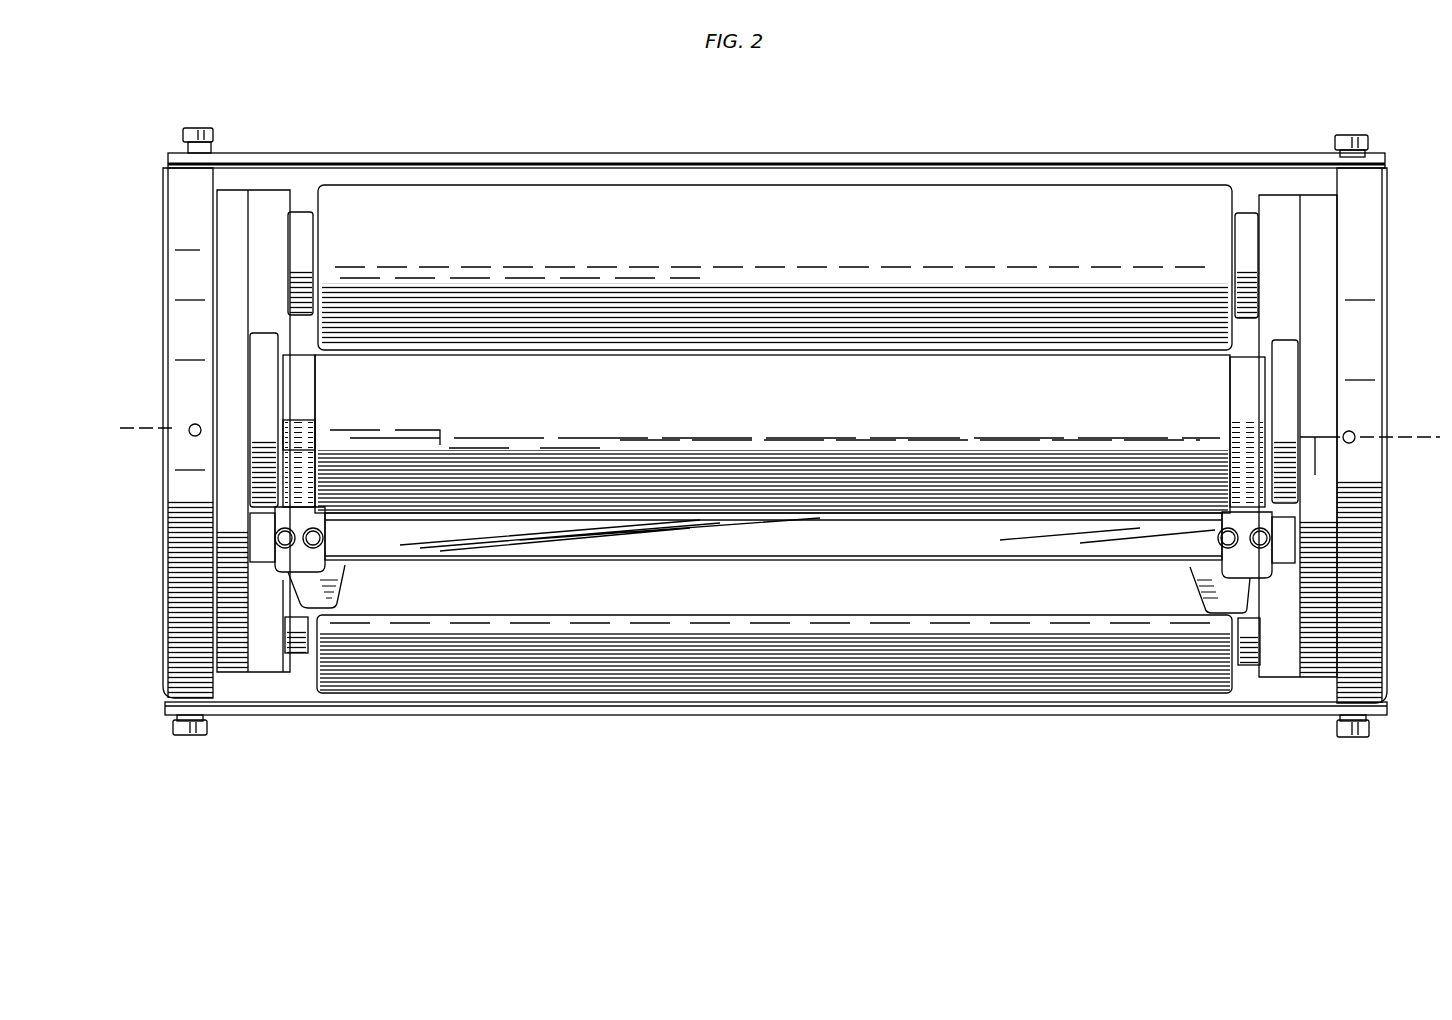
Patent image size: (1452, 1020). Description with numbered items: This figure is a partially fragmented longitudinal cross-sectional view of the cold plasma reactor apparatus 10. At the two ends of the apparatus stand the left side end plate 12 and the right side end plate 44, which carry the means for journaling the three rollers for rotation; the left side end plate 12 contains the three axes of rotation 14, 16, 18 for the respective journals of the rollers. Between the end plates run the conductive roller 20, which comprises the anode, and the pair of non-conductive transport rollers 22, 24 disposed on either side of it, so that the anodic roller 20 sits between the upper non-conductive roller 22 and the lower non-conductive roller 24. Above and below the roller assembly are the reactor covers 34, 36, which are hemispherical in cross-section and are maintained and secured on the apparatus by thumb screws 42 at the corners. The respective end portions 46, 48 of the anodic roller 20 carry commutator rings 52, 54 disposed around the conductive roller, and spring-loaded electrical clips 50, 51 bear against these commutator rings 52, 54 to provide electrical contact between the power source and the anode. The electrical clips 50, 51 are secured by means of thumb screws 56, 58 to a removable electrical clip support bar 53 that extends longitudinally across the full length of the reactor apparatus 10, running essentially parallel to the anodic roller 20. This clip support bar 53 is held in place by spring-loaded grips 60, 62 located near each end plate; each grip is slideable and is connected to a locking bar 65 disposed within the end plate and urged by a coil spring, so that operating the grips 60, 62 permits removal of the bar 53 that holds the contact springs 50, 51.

The cold plasma apparatus 10 is at (433, 130).
The left side end plate 12 is at (180, 195).
The axis of rotation 14 is at (300, 218).
The axis of rotation 16 is at (213, 408).
The axis of rotation 18 is at (293, 623).
The conductive roller 20 is at (432, 396).
The non-conductive roller 22 is at (597, 249).
The non-conductive roller 24 is at (462, 624).
The reactor cover 34 is at (585, 160).
The reactor cover 36 is at (480, 708).
The thumb screws 42 is at (200, 128).
The right side end plate 44 is at (1372, 222).
The end portion 46 is at (293, 388).
The end portion 48 is at (1218, 397).
The spring-loaded electrical clip 50 is at (265, 484).
The spring-loaded electrical clip 51 is at (1250, 493).
The commutator ring 52 is at (333, 378).
The electrical clip support bar 53 is at (590, 540).
The commutator ring 54 is at (1252, 397).
The thumb screw 56 is at (313, 533).
The thumb screw 58 is at (1272, 542).
The spring-loaded grip 60 is at (302, 583).
The spring-loaded grip 62 is at (1240, 593).
The locking bar 65 is at (250, 527).